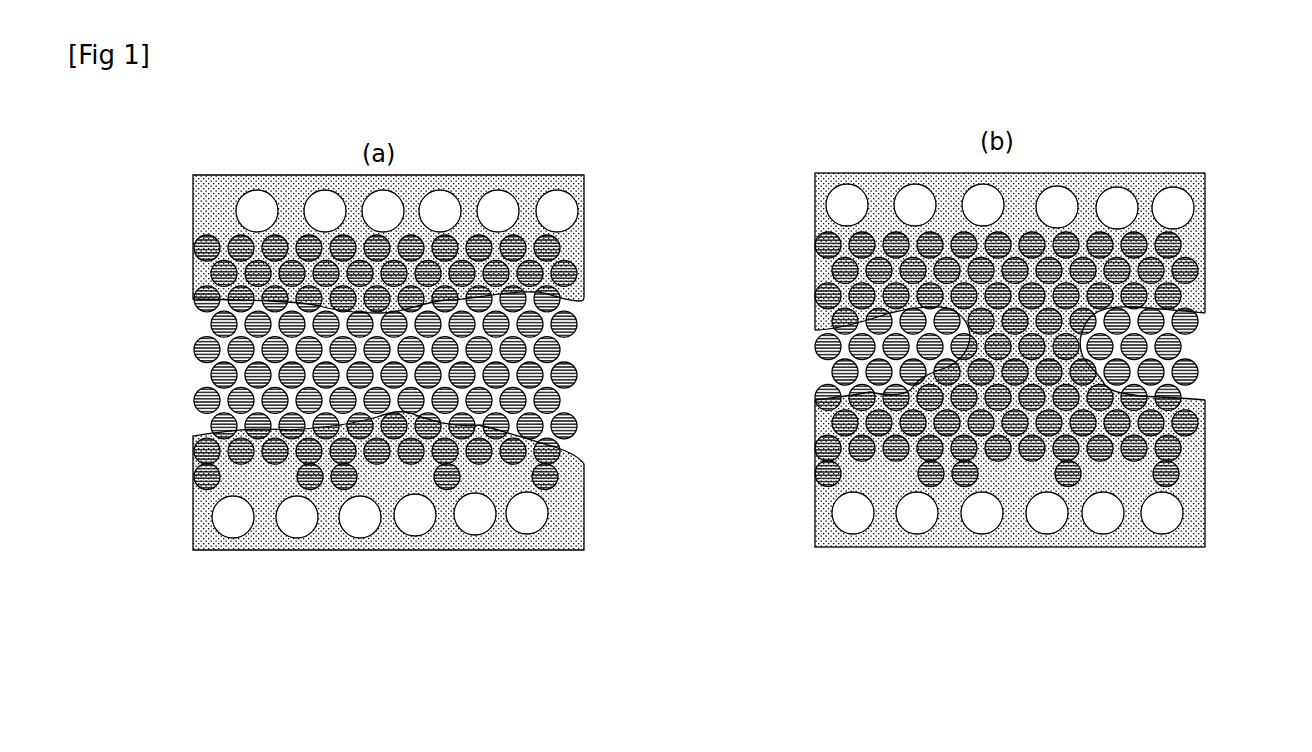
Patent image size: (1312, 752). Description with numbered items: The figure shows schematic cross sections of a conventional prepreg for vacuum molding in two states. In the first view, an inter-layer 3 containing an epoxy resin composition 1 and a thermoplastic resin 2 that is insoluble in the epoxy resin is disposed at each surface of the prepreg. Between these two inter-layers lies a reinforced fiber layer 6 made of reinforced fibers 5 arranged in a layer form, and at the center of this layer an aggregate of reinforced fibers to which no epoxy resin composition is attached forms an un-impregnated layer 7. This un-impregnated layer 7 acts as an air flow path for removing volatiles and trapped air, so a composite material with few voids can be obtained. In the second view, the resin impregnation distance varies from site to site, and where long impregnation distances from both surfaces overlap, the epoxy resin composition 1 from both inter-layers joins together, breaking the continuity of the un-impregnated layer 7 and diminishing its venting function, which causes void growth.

The epoxy resin composition 1 is at (547, 180).
The thermoplastic resin 2 is at (562, 215).
The inter-layer 3 is at (182, 175).
The reinforced fibers 5 is at (570, 267).
The reinforced fiber layer 6 is at (690, 331).
The un-impregnated layer 7 is at (182, 297).